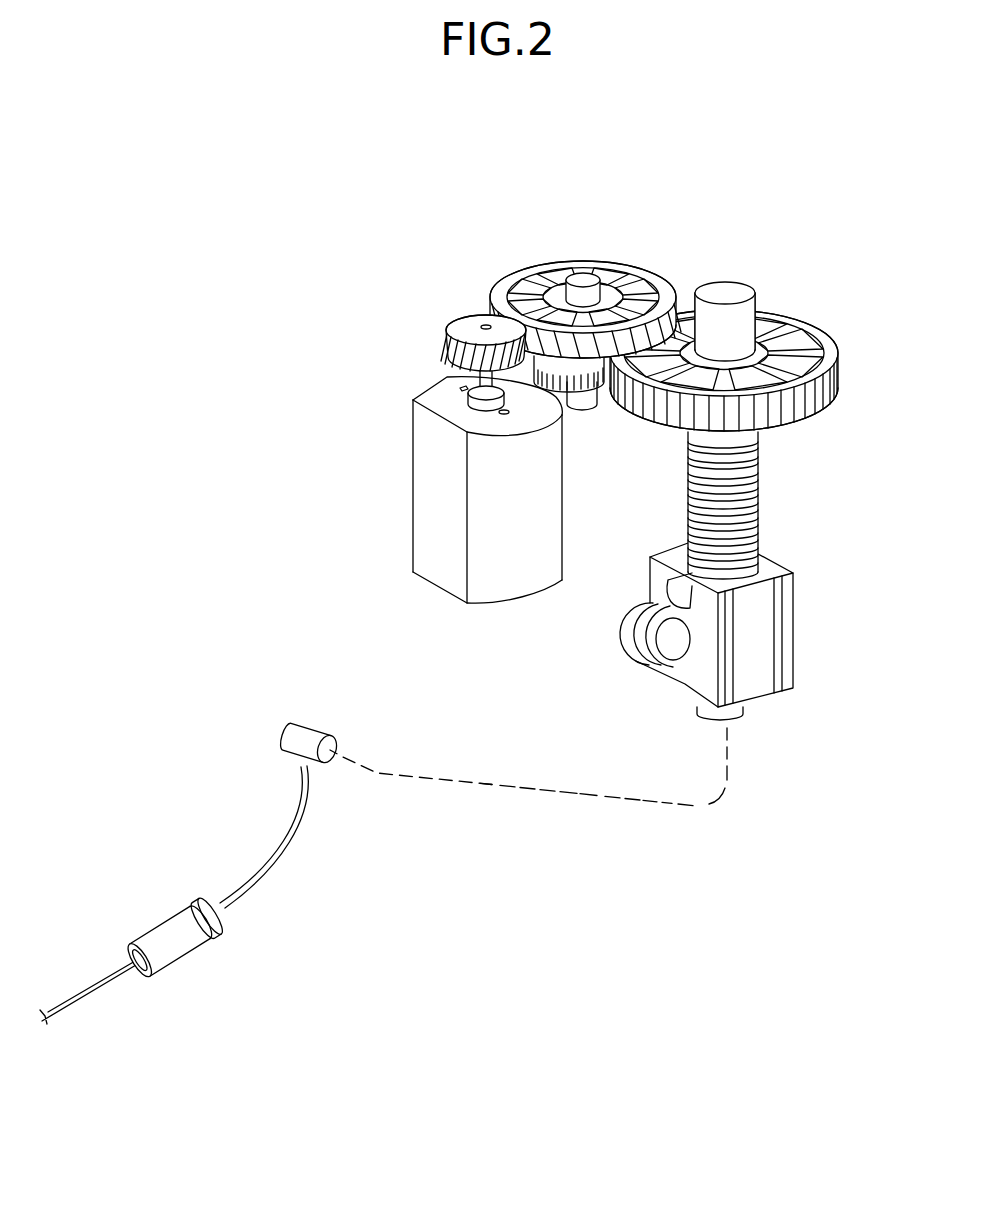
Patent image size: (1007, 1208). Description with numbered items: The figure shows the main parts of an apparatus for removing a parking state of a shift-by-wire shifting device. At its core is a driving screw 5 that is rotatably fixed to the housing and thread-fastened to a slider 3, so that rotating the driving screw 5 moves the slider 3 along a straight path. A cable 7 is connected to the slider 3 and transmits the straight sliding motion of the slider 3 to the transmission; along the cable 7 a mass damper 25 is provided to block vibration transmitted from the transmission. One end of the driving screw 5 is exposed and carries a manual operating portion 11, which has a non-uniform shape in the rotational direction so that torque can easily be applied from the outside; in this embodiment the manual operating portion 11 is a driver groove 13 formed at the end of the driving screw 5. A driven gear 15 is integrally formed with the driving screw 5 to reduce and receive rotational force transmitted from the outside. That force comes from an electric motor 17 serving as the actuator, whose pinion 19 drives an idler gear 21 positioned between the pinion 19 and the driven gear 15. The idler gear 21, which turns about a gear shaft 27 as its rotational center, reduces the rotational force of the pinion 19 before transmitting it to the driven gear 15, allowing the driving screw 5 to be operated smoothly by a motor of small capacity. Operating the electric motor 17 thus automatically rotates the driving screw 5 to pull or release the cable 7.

The slider 3 is at (767, 630).
The driving screw 5 is at (760, 475).
The cable 7 is at (297, 840).
The manual operating portion 11 is at (725, 282).
The driver groove 13 is at (725, 282).
The driven gear 15 is at (842, 372).
The electric motor 17 is at (427, 488).
The pinion 19 is at (448, 341).
The idler gear 21 is at (517, 288).
The mass damper 25 is at (193, 948).
The gear shaft 27 is at (581, 278).